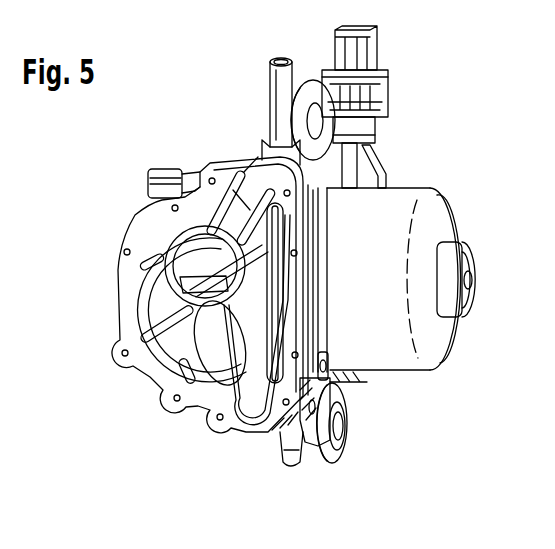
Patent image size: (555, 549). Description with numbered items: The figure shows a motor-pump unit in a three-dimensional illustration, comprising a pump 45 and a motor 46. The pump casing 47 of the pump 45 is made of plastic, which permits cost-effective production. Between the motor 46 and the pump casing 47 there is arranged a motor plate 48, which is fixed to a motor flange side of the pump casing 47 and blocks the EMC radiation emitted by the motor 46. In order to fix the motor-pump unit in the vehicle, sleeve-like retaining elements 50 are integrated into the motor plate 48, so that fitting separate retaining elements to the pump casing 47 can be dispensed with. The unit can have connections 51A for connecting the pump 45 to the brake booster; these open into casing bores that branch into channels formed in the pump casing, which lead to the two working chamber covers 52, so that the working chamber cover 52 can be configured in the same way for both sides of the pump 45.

The pump 45 is at (208, 163).
The motor 46 is at (417, 188).
The pump casing 47 is at (285, 424).
The motor plate 48 is at (346, 389).
The sleeve-like retaining element 50 is at (344, 453).
The tube 51A is at (268, 72).
The working chamber cover 52 is at (133, 300).